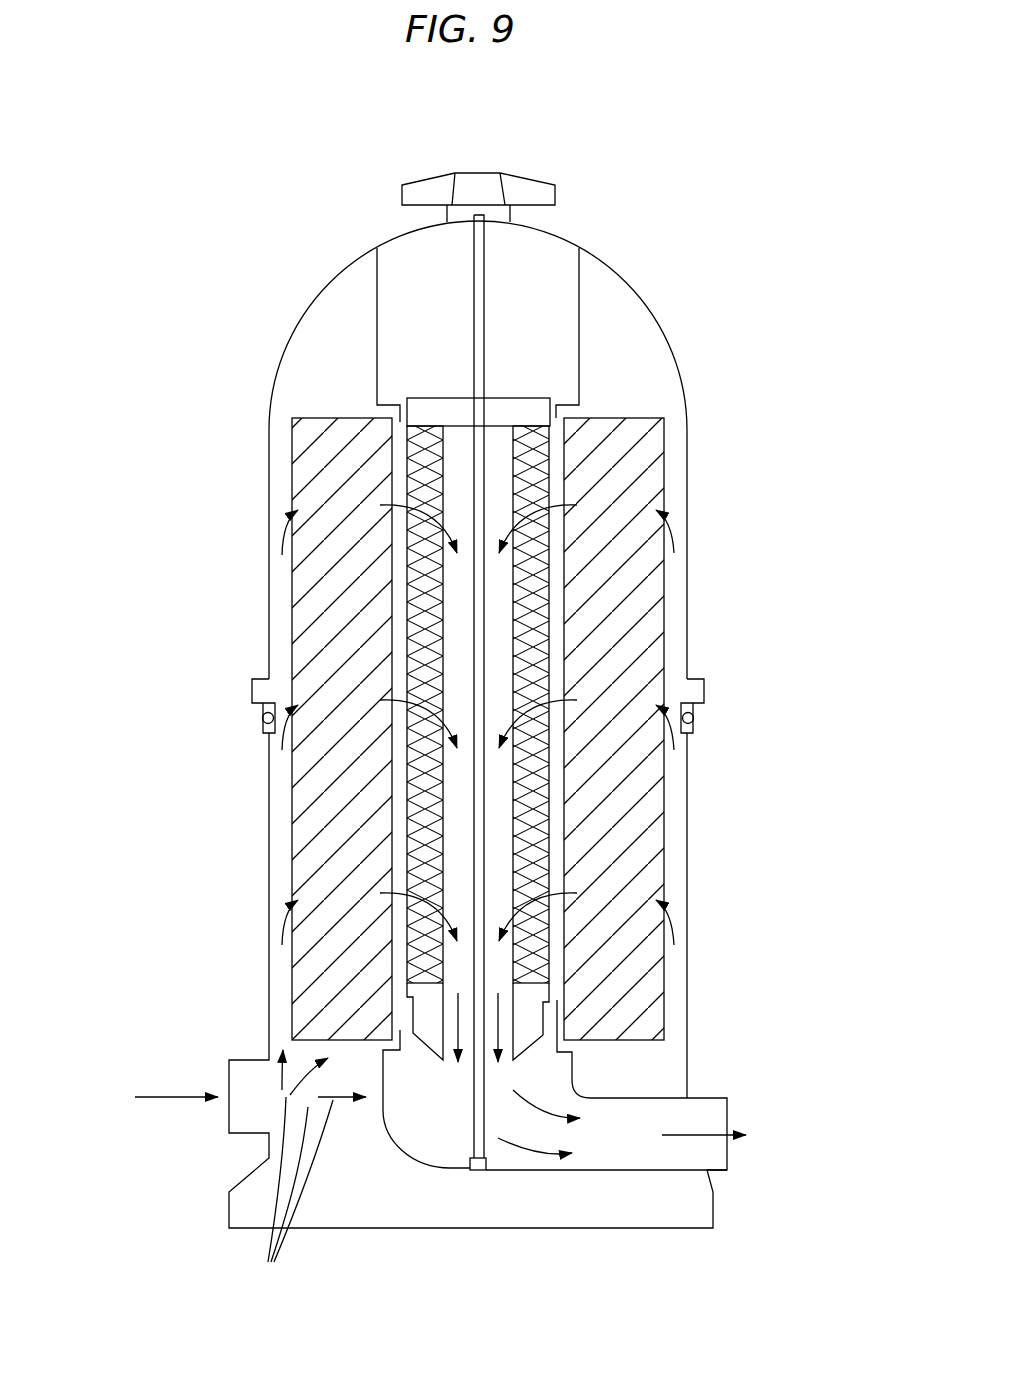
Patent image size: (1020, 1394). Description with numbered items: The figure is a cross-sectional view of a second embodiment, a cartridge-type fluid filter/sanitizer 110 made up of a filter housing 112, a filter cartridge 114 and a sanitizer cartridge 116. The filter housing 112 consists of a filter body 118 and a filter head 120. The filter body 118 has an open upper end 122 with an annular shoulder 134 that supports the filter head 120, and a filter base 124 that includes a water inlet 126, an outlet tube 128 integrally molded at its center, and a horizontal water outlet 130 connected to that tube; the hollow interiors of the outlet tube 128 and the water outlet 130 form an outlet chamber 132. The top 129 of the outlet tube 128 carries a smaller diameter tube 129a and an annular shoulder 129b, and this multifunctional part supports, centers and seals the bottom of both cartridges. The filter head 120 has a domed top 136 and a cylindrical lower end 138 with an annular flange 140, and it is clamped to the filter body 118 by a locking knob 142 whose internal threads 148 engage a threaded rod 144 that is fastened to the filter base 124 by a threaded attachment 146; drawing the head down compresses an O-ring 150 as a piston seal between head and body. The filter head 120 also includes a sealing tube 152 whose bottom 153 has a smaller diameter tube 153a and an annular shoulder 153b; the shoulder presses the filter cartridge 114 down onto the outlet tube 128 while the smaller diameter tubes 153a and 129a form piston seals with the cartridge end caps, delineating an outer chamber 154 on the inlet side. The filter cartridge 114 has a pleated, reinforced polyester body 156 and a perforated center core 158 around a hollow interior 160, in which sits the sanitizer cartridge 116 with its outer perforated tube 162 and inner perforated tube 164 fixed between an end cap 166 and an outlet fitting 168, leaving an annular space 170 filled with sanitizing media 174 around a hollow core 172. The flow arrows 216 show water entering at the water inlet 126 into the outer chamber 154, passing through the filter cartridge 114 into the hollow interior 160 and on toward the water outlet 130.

The cartridge-type fluid filter/sanitizer 110 is at (140, 742).
The filter housing 112 is at (262, 822).
The filter cartridge 114 is at (284, 851).
The sanitizer cartridge 116 is at (396, 878).
The filter body 118 is at (696, 910).
The filter head 120 is at (650, 292).
The upper end 122 is at (689, 770).
The filter base 124 is at (713, 1202).
The water inlet 126 is at (229, 1122).
The outlet tube 128 is at (578, 1090).
The top 129 is at (578, 1058).
The smaller diameter tube 129a is at (559, 1003).
The annular shoulder 129b is at (553, 1025).
The water outlet 130 is at (730, 1117).
The outlet chamber 132 is at (513, 1158).
The annular shoulder 134 is at (712, 716).
The domed top 136 is at (586, 243).
The cylindrical lower end 138 is at (689, 605).
The annular flange 140 is at (704, 680).
The locking knob 142 is at (440, 172).
The threaded rod 144 is at (473, 258).
The threaded attachment 146 is at (450, 1168).
The internal threads 148 is at (490, 230).
The O-ring 150 is at (252, 690).
The sealing tube 152 is at (580, 335).
The bottom 153 is at (586, 390).
The smaller diameter tube 153a is at (545, 445).
The annular shoulder 153b is at (557, 412).
The outer chamber 154 is at (340, 1190).
The pleated, reinforced, polyester body 156 is at (650, 482).
The center core 158 is at (576, 853).
The hollow interior 160 is at (400, 950).
The outer perforated tube 162 is at (407, 612).
The inner perforated tube 164 is at (383, 467).
The end cap 166 is at (423, 407).
The outlet fitting 168 is at (415, 993).
The annular space 170 is at (417, 445).
The hollow core 172 is at (440, 765).
The sanitizing media 174 is at (548, 808).
The flow arrows 216 is at (292, 1195).